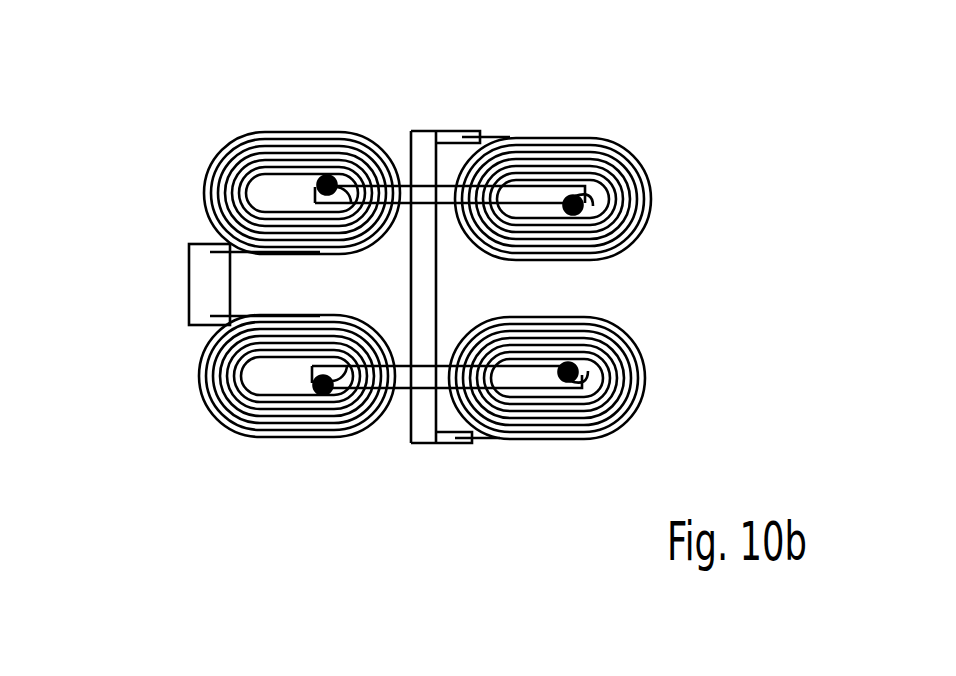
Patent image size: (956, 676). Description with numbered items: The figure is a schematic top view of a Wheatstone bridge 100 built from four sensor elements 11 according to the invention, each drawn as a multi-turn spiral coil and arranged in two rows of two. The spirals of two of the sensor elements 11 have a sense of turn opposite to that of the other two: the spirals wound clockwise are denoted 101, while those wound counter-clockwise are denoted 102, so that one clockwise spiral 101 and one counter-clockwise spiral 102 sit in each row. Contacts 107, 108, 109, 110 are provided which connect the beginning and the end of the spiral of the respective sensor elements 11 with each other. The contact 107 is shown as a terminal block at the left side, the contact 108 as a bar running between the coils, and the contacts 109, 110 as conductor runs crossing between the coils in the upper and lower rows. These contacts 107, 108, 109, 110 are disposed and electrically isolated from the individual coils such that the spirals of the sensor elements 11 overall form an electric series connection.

The Wheatstone bridge 100 is at (119, 431).
The sensor element 11 is at (627, 338).
The clockwise-wound spiral 101 is at (290, 133).
The counter-clockwise-wound spiral 102 is at (556, 160).
The contact 107 is at (193, 282).
The contact 108 is at (423, 148).
The contact 109 is at (445, 197).
The contact 110 is at (440, 378).